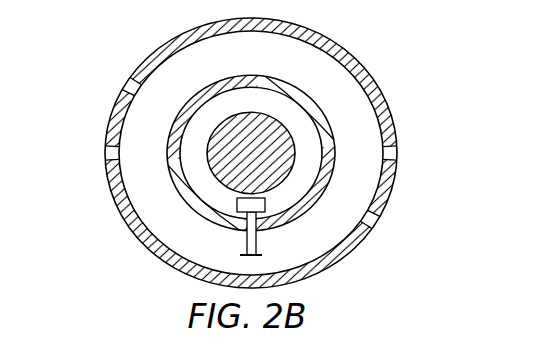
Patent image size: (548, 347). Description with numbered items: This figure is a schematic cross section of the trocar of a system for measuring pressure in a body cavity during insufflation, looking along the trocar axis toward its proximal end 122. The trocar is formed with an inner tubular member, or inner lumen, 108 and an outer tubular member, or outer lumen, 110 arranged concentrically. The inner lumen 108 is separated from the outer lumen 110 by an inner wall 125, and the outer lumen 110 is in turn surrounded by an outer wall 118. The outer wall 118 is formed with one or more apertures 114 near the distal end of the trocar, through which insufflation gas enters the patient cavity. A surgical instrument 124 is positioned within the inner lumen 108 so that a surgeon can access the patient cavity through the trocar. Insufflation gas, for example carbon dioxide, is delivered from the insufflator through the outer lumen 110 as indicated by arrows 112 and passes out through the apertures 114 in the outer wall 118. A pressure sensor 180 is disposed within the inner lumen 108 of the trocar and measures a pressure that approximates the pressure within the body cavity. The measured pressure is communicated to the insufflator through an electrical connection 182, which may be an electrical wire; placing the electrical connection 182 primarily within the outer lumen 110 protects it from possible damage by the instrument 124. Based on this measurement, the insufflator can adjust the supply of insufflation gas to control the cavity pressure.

The inner tubular member 108 is at (265, 104).
The outer tubular member 110 is at (268, 56).
The arrows 112 is at (348, 110).
The apertures 114 is at (127, 80).
The outer wall 118 is at (107, 188).
The proximal end 122 is at (300, 172).
The surgical instrument 124 is at (236, 164).
The inner wall 125 is at (230, 77).
The pressure sensor 180 is at (266, 204).
The electrical connection 182 is at (247, 240).